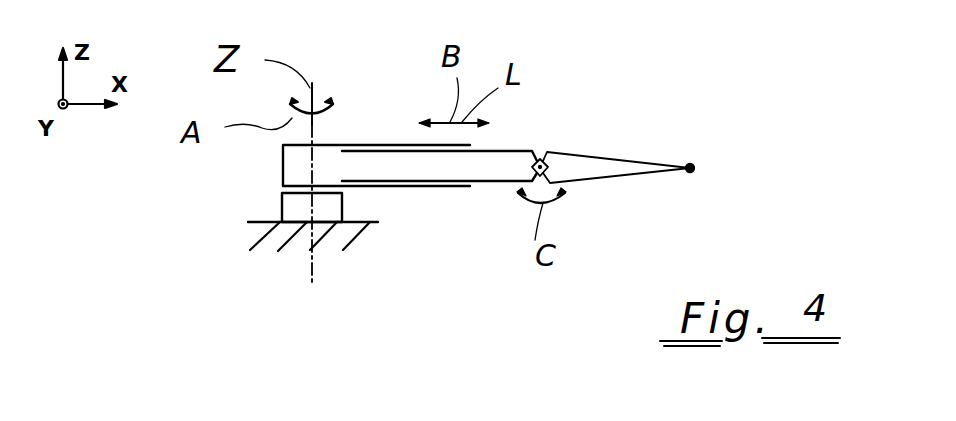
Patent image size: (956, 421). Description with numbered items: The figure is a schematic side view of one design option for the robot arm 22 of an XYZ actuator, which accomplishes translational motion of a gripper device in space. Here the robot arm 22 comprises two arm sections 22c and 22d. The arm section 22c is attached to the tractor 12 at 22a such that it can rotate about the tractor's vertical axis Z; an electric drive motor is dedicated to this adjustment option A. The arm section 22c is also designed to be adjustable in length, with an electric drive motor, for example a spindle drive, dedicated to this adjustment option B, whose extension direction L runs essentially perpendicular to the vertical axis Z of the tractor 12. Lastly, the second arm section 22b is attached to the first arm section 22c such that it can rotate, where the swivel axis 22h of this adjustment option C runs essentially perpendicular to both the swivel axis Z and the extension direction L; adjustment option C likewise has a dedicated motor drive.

The tractor 12 is at (270, 247).
The robot arm 22 is at (637, 68).
The attachment point 22a is at (290, 212).
The second arm section 22b is at (693, 163).
The first arm section 22c is at (422, 178).
The arm section 22d is at (607, 170).
The swivel axis 22h is at (540, 158).